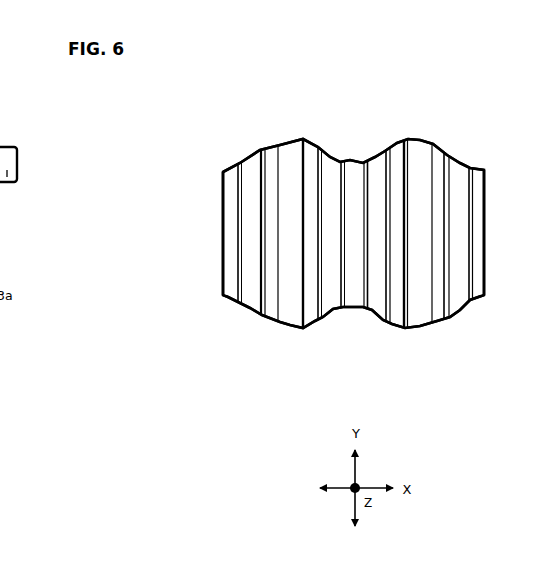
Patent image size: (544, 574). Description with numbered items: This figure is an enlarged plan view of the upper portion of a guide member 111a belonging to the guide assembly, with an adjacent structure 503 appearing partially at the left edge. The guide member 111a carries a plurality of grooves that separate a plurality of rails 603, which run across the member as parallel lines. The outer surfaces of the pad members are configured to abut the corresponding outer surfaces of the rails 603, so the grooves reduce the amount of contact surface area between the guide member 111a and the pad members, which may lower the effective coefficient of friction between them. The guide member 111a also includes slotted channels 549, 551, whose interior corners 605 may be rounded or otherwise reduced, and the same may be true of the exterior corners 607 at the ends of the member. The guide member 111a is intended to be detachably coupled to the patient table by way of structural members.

The guide member 111a is at (186, 222).
The adjacent component 503 is at (12, 187).
The slotted channel 549 is at (290, 313).
The slotted channel 551 is at (417, 150).
The rails 603 is at (353, 171).
The interior corners 605 is at (269, 147).
The exterior corners 607 is at (233, 258).